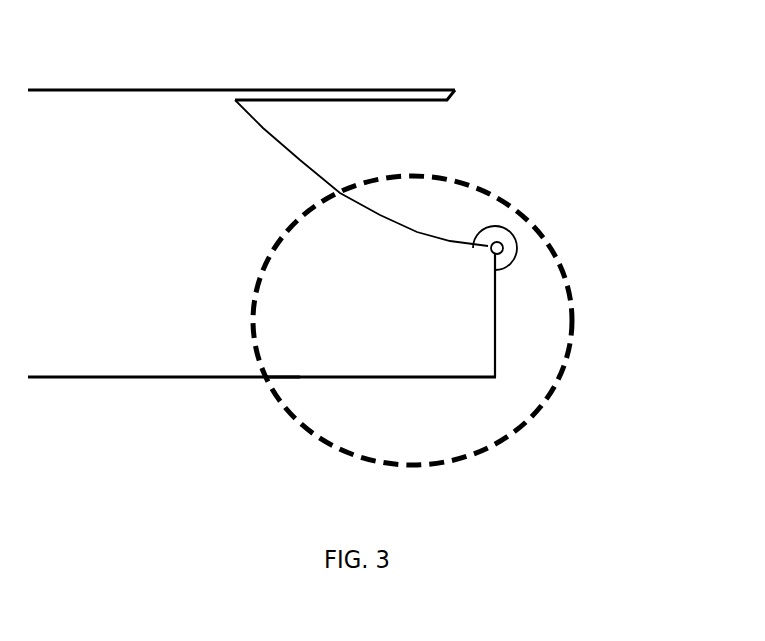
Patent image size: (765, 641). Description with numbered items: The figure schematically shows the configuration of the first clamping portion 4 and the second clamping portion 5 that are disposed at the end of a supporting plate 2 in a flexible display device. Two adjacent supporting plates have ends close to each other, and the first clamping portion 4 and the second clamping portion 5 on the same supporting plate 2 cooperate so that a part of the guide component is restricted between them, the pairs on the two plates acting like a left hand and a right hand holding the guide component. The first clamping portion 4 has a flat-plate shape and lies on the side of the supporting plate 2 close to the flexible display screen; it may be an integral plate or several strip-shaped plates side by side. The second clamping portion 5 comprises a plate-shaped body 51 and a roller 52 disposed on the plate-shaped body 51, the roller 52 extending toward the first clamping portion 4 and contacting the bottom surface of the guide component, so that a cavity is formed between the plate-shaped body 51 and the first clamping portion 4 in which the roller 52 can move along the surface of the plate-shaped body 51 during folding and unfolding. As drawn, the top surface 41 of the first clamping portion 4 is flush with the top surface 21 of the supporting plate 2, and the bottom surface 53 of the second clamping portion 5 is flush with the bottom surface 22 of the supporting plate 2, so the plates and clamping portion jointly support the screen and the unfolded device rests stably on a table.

The supporting plate 2 is at (164, 391).
The top surface of the supporting plate 21 is at (90, 88).
The bottom surface of the supporting plate 22 is at (175, 378).
The first clamping portion 4 is at (361, 127).
The top surface of the first clamping portion 41 is at (398, 88).
The second clamping portion 5 is at (462, 346).
The plate-shaped body 51 is at (473, 344).
The roller 52 is at (509, 244).
The bottom surface of the second clamping portion 53 is at (413, 378).